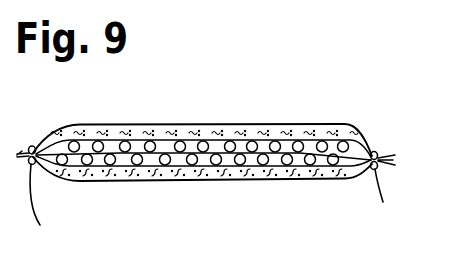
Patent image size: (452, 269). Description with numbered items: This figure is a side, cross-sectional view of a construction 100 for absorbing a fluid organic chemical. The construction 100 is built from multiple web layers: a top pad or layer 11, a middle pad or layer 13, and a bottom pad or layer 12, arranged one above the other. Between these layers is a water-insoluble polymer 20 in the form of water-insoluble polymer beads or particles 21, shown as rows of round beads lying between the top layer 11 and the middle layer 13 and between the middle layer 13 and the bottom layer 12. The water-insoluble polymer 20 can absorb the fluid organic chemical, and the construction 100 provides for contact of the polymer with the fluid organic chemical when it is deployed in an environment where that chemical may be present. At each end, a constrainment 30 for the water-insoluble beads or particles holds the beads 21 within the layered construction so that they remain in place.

The construction for absorbing a fluid organic chemical 100 is at (294, 65).
The top pad or layer 11 is at (180, 124).
The bottom pad or layer 12 is at (211, 181).
The middle pad or layer 13 is at (314, 143).
The water-insoluble polymer 20 is at (198, 201).
The water-insoluble polymer bead or particle 21 is at (277, 158).
The constrainment for water-insoluble beads or particles 30 is at (206, 199).